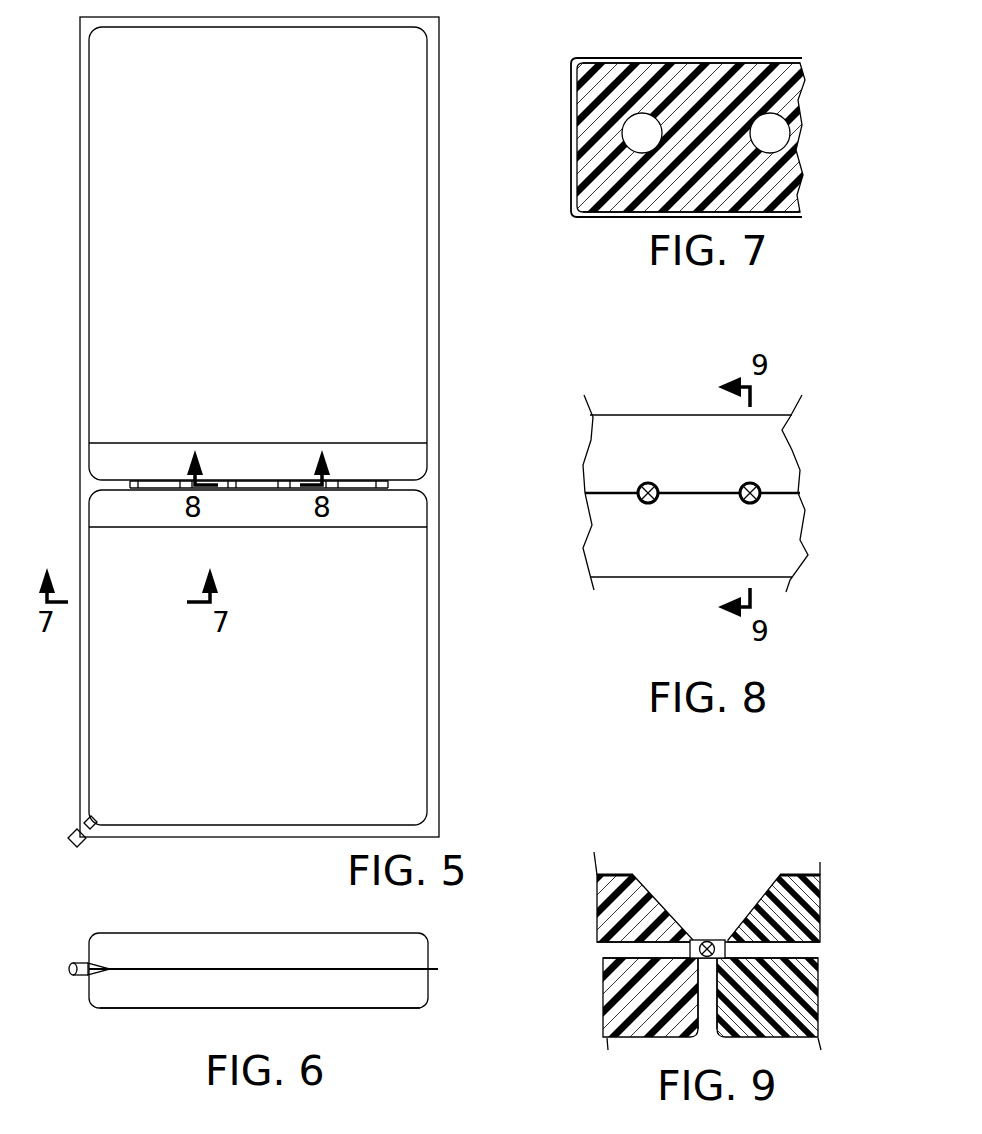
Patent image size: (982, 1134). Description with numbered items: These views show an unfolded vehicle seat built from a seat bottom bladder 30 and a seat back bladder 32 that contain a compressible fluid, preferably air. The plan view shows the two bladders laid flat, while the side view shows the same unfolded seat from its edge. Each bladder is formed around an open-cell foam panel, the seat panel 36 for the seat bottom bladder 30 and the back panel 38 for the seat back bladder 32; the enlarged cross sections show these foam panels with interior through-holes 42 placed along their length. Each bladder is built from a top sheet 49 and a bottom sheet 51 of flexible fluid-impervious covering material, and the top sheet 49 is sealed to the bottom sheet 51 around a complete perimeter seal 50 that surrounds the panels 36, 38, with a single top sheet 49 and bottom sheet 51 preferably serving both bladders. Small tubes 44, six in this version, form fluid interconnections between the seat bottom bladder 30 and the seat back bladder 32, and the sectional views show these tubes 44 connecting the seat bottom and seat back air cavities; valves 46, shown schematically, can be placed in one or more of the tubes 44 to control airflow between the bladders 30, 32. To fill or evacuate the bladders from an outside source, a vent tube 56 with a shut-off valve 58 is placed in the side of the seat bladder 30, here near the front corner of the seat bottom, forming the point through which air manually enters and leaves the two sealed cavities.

In FIG. 5, the seat bottom bladder 30 is at (339, 686).
In FIG. 5, the seat back bladder 32 is at (356, 281).
In FIG. 7, the seat panel 36 is at (740, 90).
In FIG. 9, the seat panel 36 is at (790, 900).
In FIG. 9, the back panel 38 is at (600, 893).
In FIG. 7, the through-holes 42 is at (792, 125).
In FIG. 9, the through-holes 42 is at (610, 948).
In FIG. 5, the tubes 44 is at (130, 485).
In FIG. 8, the tubes 44 is at (648, 483).
In FIG. 9, the tubes 44 is at (707, 940).
In FIG. 8, the valves 46 is at (750, 483).
In FIG. 9, the valves 46 is at (710, 940).
In FIG. 5, the top sheet 49 is at (120, 150).
In FIG. 6, the top sheet 49 is at (172, 933).
In FIG. 7, the top sheet 49 is at (600, 63).
In FIG. 8, the top sheet 49 is at (610, 422).
In FIG. 9, the top sheet 49 is at (604, 875).
In FIG. 5, the perimeter seal 50 is at (80, 352).
In FIG. 6, the perimeter seal 50 is at (435, 965).
In FIG. 7, the perimeter seal 50 is at (571, 135).
In FIG. 6, the bottom sheet 51 is at (305, 1008).
In FIG. 7, the bottom sheet 51 is at (628, 217).
In FIG. 8, the bottom sheet 51 is at (675, 560).
In FIG. 9, the bottom sheet 51 is at (745, 1037).
In FIG. 5, the vent tube 56 is at (90, 833).
In FIG. 6, the vent tube 56 is at (97, 960).
In FIG. 5, the shut-off valve 58 is at (74, 832).
In FIG. 6, the shut-off valve 58 is at (79, 962).